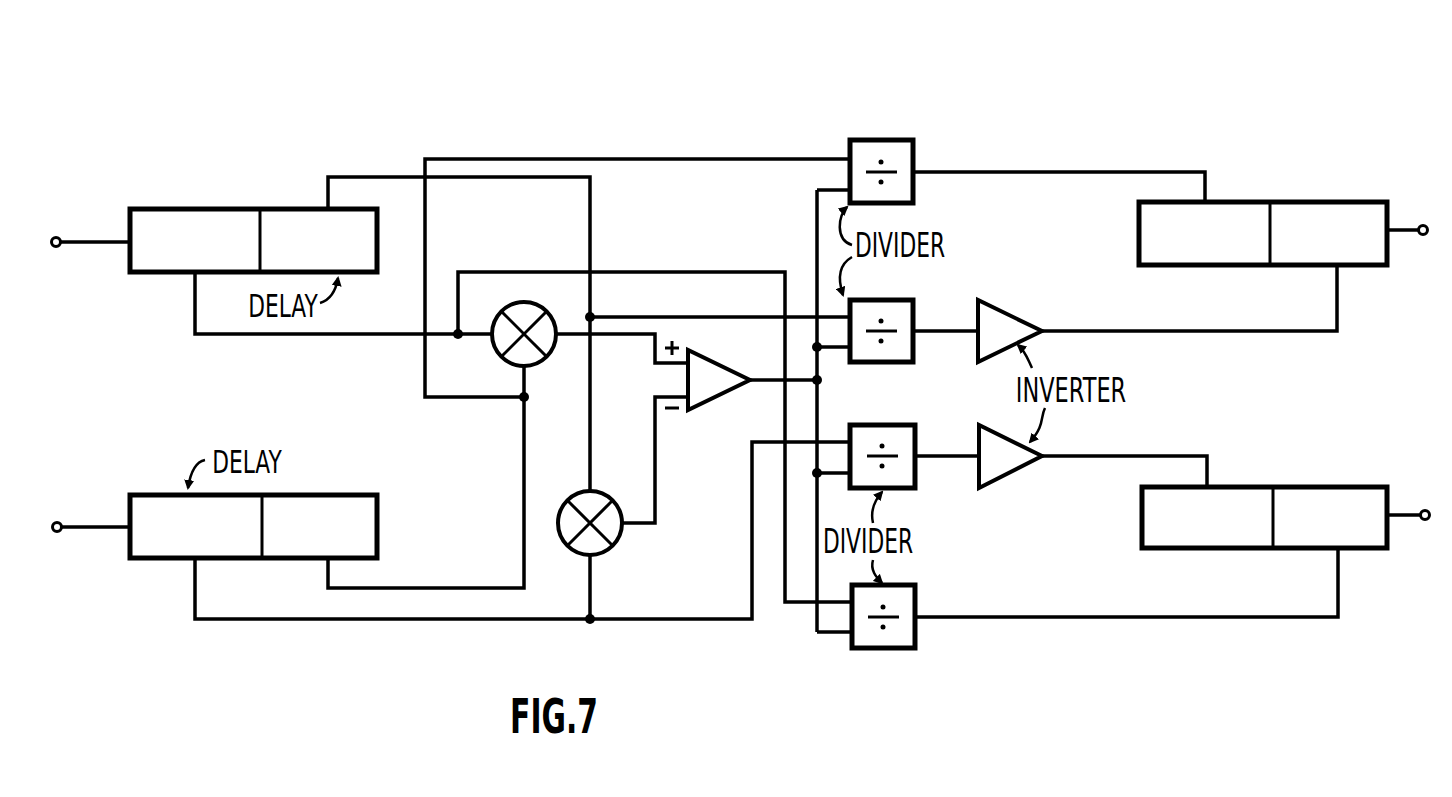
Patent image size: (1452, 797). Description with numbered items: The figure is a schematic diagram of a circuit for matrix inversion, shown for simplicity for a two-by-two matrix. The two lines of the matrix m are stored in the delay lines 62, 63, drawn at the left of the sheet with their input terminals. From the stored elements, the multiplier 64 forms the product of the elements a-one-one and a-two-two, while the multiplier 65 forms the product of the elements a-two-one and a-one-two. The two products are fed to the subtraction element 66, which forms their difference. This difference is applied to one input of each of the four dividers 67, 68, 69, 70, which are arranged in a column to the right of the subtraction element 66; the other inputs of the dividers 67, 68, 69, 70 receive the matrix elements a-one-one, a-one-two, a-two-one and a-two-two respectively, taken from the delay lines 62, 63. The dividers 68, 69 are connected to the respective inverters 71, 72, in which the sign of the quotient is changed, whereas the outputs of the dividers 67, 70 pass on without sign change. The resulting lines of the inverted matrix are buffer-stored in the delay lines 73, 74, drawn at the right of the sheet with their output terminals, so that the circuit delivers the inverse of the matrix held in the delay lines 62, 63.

The delay line 62 is at (280, 220).
The delay line 63 is at (294, 535).
The multiplier 64 is at (527, 322).
The multiplier 65 is at (581, 545).
The subtraction element 66 is at (705, 410).
The divider 67 is at (890, 140).
The divider 68 is at (897, 362).
The divider 69 is at (915, 483).
The divider 70 is at (870, 633).
The inverter 71 is at (1027, 320).
The inverter 72 is at (1000, 477).
The delay line 73 is at (1327, 207).
The delay line 74 is at (1245, 543).